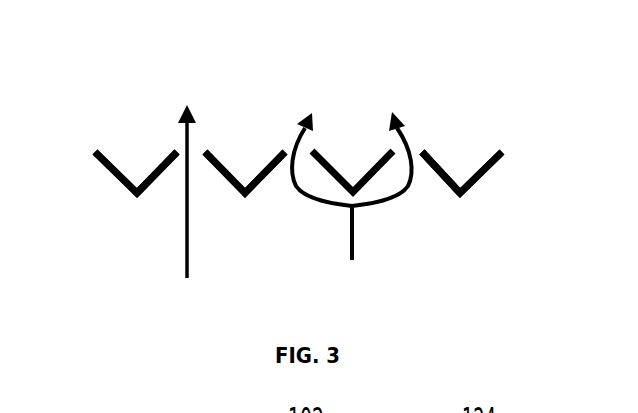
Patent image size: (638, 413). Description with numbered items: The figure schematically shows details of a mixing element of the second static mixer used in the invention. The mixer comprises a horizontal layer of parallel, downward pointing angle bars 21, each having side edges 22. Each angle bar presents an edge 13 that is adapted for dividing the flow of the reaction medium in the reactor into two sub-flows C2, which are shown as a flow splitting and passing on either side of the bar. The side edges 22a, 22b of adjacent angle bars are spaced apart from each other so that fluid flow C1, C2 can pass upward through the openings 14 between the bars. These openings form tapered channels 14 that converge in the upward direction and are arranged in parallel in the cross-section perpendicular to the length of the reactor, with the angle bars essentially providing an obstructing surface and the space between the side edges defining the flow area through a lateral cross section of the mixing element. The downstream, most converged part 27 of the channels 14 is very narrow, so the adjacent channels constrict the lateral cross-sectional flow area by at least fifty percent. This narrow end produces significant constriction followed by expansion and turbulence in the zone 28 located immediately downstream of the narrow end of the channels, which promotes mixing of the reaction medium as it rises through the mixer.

The edge 13 is at (466, 194).
The channels 14 is at (205, 135).
The angle bars 21 is at (442, 183).
The side edges 22 is at (428, 150).
The side edge of angle bar 22a is at (175, 158).
The side edge of adjacent angle bar 22b is at (209, 156).
The downstream most converged part of the channels 27 is at (171, 153).
The zone immediately downstream of the narrow end of the channels 28 is at (165, 107).
The fluid flow C1 is at (186, 268).
The sub-flows C2 is at (349, 246).